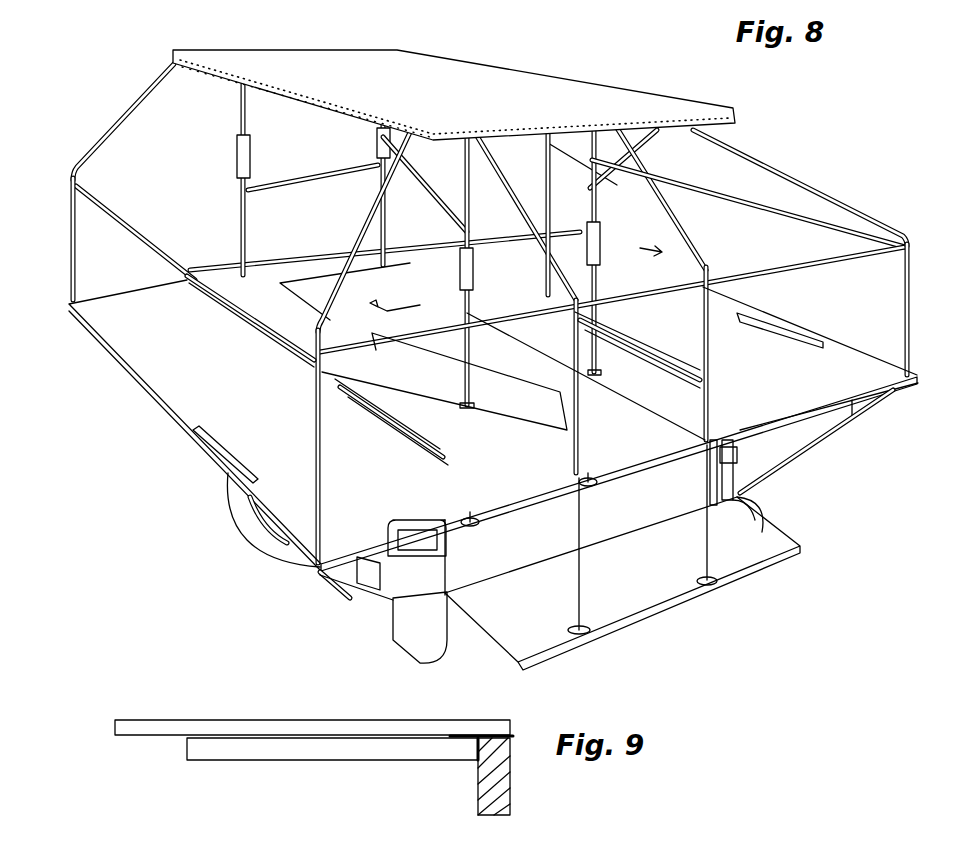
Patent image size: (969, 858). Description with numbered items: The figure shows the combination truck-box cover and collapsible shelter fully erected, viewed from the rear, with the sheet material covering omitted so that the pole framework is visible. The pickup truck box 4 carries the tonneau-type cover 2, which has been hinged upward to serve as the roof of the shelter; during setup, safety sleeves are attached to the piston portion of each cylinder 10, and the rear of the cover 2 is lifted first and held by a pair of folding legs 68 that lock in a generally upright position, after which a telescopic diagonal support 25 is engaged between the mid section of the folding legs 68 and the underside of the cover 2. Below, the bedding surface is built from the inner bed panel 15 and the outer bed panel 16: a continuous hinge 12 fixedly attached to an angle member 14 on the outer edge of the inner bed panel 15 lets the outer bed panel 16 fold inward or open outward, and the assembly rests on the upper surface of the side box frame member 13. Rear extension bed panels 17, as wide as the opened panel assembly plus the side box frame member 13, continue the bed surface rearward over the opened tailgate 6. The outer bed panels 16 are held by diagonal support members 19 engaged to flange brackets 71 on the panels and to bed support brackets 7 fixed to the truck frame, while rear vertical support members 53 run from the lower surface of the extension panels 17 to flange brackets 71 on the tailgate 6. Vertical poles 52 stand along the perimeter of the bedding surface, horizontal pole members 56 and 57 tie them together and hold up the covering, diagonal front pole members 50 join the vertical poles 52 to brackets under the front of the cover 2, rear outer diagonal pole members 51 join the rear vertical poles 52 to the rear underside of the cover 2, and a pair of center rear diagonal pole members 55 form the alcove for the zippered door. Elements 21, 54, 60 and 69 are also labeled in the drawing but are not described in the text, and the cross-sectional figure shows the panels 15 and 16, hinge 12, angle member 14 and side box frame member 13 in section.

In FIG. 8, the tonneau-type cover 2 is at (578, 92).
In FIG. 8, the pickup truck box 4 is at (767, 488).
In FIG. 8, the tailgate 6 is at (750, 557).
In FIG. 8, the bed support bracket 7 is at (350, 596).
In FIG. 8, the cylinder 10 is at (504, 268).
In FIG. 8, the continuous hinge 12 is at (250, 305).
In FIG. 9, the continuous hinge 12 is at (512, 736).
In FIG. 8, the side box frame member 13 is at (428, 450).
In FIG. 9, the side box frame member 13 is at (508, 790).
In FIG. 8, the angle member 14 is at (400, 428).
In FIG. 9, the angle member 14 is at (475, 745).
In FIG. 8, the inner bed panel 15 is at (420, 415).
In FIG. 9, the inner bed panel 15 is at (242, 752).
In FIG. 8, the outer bed panel 16 is at (160, 378).
In FIG. 9, the outer bed panel 16 is at (222, 727).
In FIG. 8, the rear extension bed panel 17 is at (250, 525).
In FIG. 8, the diagonal support member 19 is at (320, 592).
In FIG. 8, the post foot bracket 21 is at (462, 405).
In FIG. 8, the telescopic diagonal support 25 is at (205, 458).
In FIG. 8, the diagonal front pole member 50 is at (148, 107).
In FIG. 8, the rear outer diagonal pole member 51 is at (367, 228).
In FIG. 8, the vertical pole 52 is at (77, 255).
In FIG. 8, the rear vertical support member 53 is at (578, 590).
In FIG. 8, the post foot 54 is at (470, 523).
In FIG. 8, the center rear diagonal pole member 55 is at (553, 255).
In FIG. 8, the horizontal pole member 56 is at (182, 252).
In FIG. 8, the horizontal pole member 57 is at (398, 342).
In FIG. 8, the upper back rail 60 is at (300, 197).
In FIG. 8, the folding leg 68 is at (462, 255).
In FIG. 8, the upper post bracket 69 is at (212, 158).
In FIG. 8, the flange bracket 71 is at (592, 628).